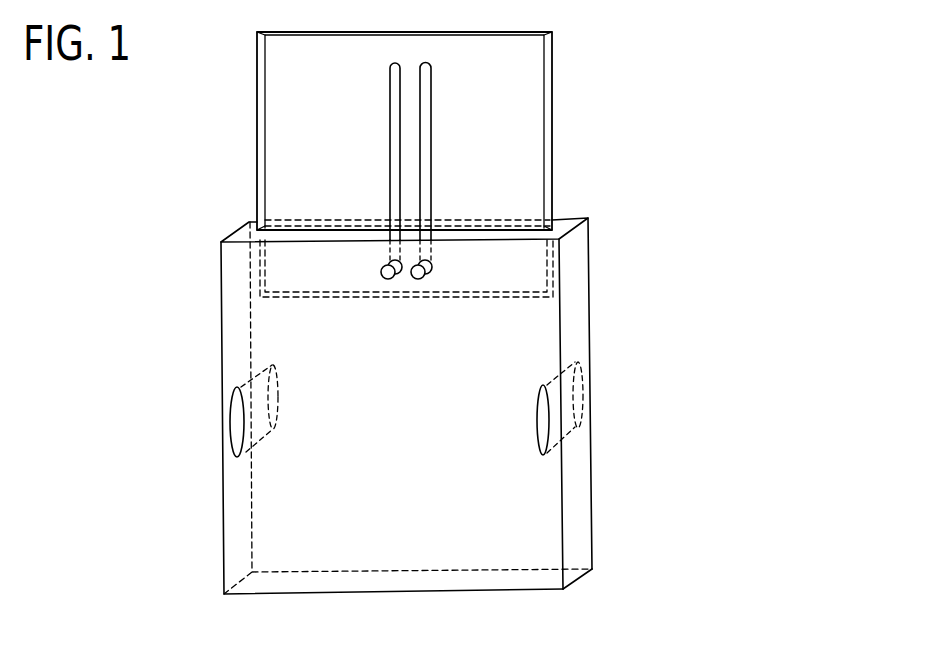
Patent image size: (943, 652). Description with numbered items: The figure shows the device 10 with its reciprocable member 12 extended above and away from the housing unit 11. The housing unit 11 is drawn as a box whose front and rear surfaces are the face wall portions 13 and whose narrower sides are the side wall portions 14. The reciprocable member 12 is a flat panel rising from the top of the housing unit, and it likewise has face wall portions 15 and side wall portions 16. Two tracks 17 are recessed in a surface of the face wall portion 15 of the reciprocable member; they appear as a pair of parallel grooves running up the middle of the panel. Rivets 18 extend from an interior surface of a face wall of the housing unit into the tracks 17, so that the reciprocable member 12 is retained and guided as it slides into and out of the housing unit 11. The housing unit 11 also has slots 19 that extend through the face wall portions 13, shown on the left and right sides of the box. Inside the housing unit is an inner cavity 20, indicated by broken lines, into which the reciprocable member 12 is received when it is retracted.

The device 10 is at (693, 202).
The housing unit 11 is at (580, 576).
The reciprocable member 12 is at (546, 105).
The face wall portions 13 is at (532, 515).
The side wall portions 14 is at (575, 325).
The face wall portions 15 is at (293, 113).
The side wall portions 16 is at (546, 60).
The tracks 17 is at (388, 158).
The rivets 18 is at (387, 278).
The slots 19 is at (237, 427).
The inner cavity 20 is at (268, 537).